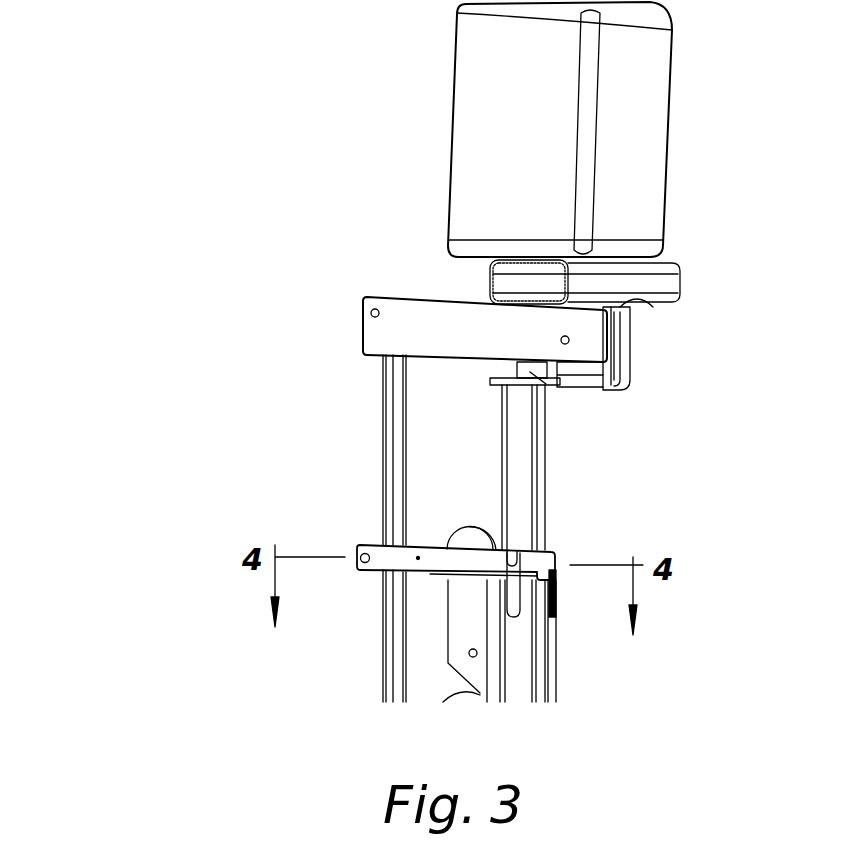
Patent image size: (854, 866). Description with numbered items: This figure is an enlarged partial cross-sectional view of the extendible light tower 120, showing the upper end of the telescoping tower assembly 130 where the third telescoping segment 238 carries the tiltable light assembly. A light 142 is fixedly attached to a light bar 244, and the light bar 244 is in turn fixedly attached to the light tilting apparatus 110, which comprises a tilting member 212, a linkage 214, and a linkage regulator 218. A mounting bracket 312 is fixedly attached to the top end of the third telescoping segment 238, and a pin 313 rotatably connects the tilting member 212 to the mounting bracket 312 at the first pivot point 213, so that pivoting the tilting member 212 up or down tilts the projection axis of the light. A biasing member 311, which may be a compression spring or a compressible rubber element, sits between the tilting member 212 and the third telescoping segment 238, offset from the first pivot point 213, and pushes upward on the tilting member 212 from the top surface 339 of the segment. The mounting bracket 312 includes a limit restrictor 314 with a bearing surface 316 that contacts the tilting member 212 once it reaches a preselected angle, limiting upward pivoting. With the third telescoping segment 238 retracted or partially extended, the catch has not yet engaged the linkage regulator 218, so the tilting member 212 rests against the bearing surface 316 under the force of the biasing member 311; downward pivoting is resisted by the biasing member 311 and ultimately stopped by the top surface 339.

The light tilting apparatus 110 is at (243, 395).
The extendible light tower 120 is at (128, 533).
The telescoping tower assembly 130 is at (580, 687).
The light 142 is at (672, 132).
The tilting member 212 is at (363, 333).
The first pivot point 213 is at (613, 348).
The linkage 214 is at (383, 470).
The linkage regulator 218 is at (395, 558).
The third telescoping segment 238 is at (548, 495).
The light bar 244 is at (672, 265).
The biasing member 311 is at (600, 383).
The mounting bracket 312 is at (622, 391).
The pin 313 is at (561, 340).
The limit restrictor 314 is at (618, 327).
The bearing surface 316 is at (633, 298).
The top surface 339 is at (497, 373).